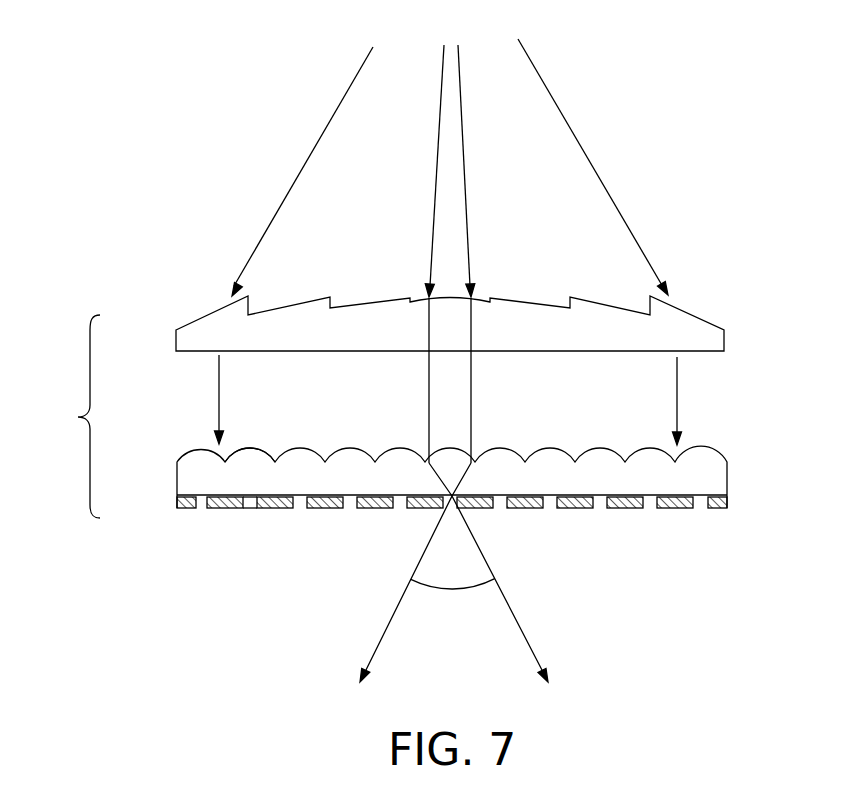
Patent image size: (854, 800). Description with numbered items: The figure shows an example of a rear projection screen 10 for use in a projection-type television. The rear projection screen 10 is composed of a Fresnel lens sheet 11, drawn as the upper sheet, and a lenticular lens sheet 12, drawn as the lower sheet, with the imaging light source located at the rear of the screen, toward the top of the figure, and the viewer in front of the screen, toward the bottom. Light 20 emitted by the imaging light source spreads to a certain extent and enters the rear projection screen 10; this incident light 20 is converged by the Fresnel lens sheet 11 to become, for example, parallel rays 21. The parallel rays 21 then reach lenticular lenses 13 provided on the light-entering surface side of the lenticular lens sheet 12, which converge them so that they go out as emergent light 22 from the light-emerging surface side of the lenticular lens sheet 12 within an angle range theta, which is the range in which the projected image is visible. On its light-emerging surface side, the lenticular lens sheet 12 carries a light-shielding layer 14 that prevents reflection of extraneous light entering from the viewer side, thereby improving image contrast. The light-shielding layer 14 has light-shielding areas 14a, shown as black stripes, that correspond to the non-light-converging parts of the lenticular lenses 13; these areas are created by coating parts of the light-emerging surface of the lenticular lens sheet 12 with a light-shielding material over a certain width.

The rear projection screen 10 is at (71, 416).
The Fresnel lens sheet 11 is at (186, 340).
The lenticular lens sheet 12 is at (186, 482).
The lenticular lenses 13 is at (250, 449).
The light-shielding layer 14 is at (740, 499).
The light-shielding areas 14a is at (268, 510).
The light 20 is at (590, 160).
The parallel rays 21 is at (678, 400).
The emergent light 22 is at (518, 610).